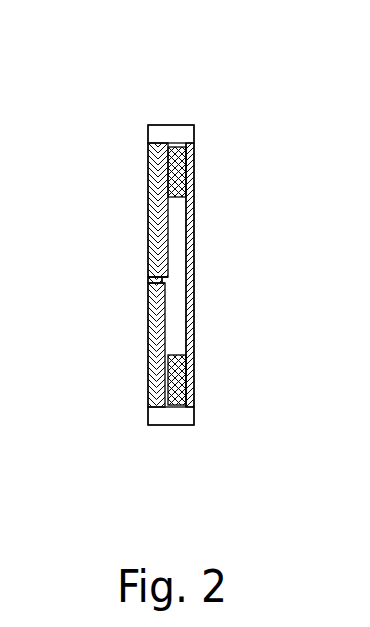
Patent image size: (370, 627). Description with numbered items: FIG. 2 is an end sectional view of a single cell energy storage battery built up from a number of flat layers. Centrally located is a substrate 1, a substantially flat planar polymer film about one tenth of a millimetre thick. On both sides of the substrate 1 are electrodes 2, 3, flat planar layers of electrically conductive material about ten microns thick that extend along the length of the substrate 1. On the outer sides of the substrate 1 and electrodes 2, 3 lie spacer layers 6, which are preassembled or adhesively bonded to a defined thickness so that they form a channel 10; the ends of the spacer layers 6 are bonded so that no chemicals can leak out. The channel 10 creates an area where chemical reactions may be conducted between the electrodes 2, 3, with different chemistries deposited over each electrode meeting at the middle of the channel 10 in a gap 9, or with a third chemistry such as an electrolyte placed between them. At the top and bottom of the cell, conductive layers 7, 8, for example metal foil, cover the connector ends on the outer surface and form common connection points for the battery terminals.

The substrate 1 is at (140, 160).
The electrode 2 is at (140, 213).
The electrode 3 is at (140, 330).
The spacer layer 6 is at (195, 172).
The conductive layer 7 is at (171, 116).
The conductive layer 8 is at (171, 437).
The gap 9 is at (140, 275).
The channel 10 is at (195, 263).